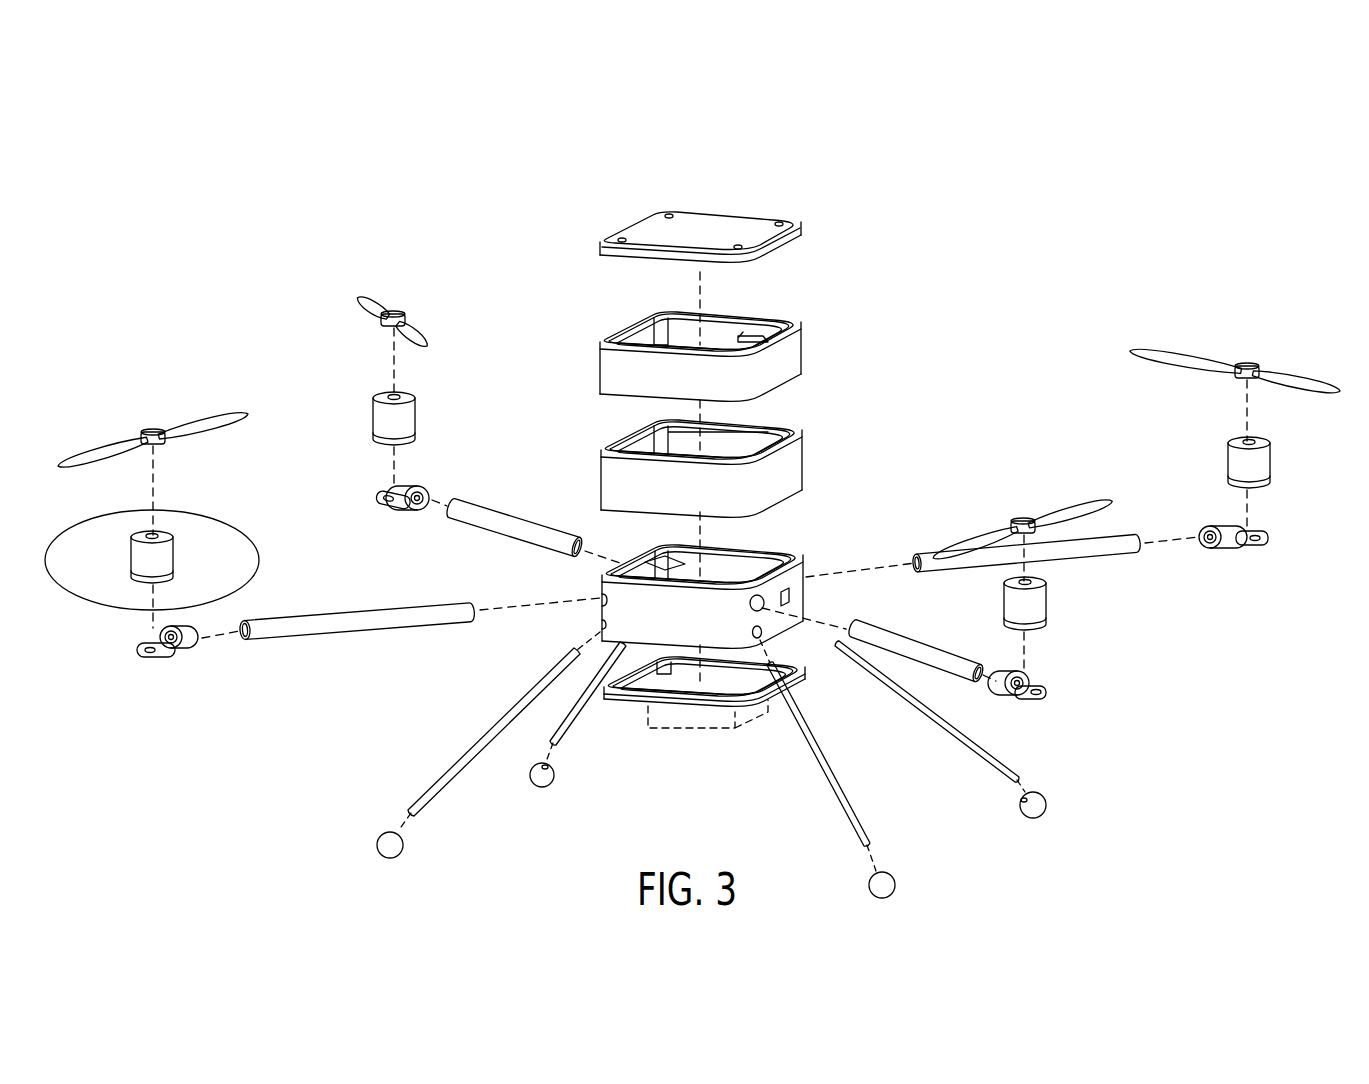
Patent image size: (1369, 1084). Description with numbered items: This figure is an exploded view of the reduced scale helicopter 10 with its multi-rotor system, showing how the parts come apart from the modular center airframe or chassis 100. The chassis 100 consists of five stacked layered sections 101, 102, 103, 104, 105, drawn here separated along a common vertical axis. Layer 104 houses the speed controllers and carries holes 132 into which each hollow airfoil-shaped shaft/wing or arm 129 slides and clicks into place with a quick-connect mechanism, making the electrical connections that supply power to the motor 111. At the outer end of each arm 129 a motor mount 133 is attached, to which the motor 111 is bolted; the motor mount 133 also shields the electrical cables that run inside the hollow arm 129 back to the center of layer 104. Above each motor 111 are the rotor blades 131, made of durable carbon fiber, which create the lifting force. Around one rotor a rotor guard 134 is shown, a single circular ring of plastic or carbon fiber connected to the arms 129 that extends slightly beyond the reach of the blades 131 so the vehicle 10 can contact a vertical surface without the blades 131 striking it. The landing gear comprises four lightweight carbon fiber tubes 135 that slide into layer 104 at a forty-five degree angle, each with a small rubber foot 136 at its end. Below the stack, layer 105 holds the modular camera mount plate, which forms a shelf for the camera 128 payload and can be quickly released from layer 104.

The reduced scale helicopter 10 is at (1083, 161).
The modular center airframe 100 is at (740, 202).
The layered section 101 is at (802, 240).
The layered section 102 is at (803, 360).
The layered section 103 is at (803, 470).
The layered section 104 is at (804, 605).
The layered section 105 is at (806, 690).
The motor 111 is at (131, 562).
The camera 128 is at (702, 736).
The shaft/wing 129 is at (366, 638).
The rotor blade 131 is at (205, 416).
The hole 132 is at (796, 550).
The motor mount 133 is at (176, 659).
The rotor guard 134 is at (106, 607).
The tube 135 is at (571, 726).
The feet 136 is at (403, 851).